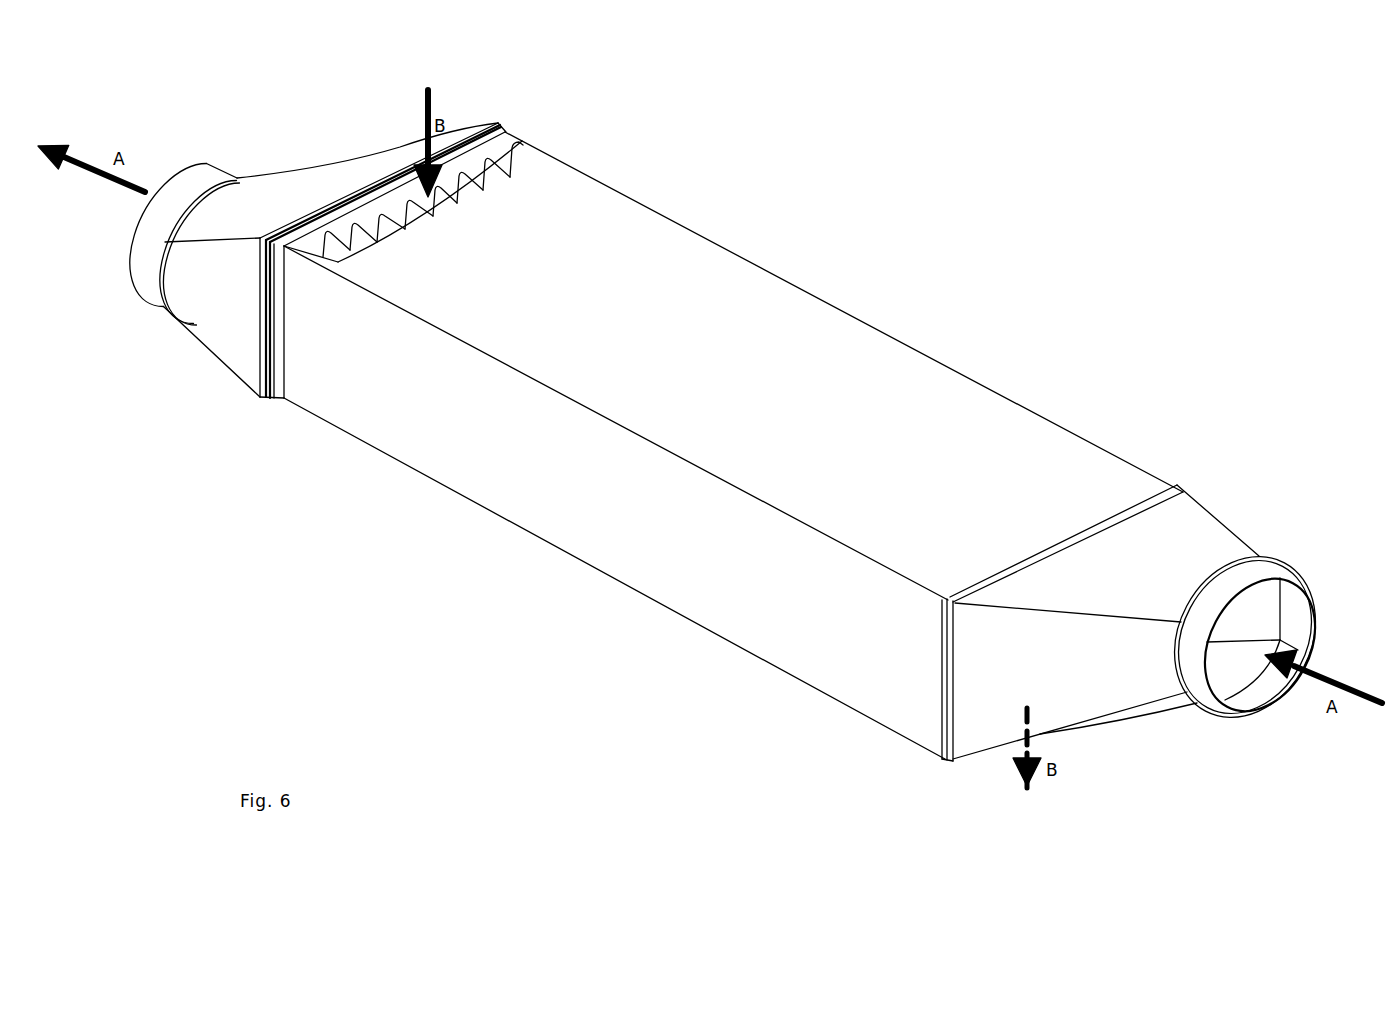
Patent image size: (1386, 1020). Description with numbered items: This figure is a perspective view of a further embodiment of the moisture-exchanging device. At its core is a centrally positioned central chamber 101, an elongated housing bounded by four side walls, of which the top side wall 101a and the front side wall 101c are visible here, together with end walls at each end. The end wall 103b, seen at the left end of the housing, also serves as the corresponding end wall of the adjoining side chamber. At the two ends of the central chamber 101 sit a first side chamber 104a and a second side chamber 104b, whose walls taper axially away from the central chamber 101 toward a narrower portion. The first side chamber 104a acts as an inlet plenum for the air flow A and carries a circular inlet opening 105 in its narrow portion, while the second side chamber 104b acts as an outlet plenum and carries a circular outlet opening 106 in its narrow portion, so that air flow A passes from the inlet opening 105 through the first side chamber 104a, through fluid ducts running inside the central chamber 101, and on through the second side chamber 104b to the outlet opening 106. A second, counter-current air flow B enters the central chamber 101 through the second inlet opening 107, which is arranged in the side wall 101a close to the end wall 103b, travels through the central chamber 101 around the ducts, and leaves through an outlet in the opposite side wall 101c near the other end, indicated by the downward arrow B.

The central chamber 101 is at (908, 348).
The side wall 101a is at (719, 374).
The side wall 101c is at (616, 502).
The end wall 103b is at (504, 127).
The first side chamber 104a is at (1246, 538).
The second side chamber 104b is at (307, 166).
The inlet opening 105 is at (1242, 708).
The outlet opening 106 is at (131, 268).
The second inlet opening 107 is at (536, 150).